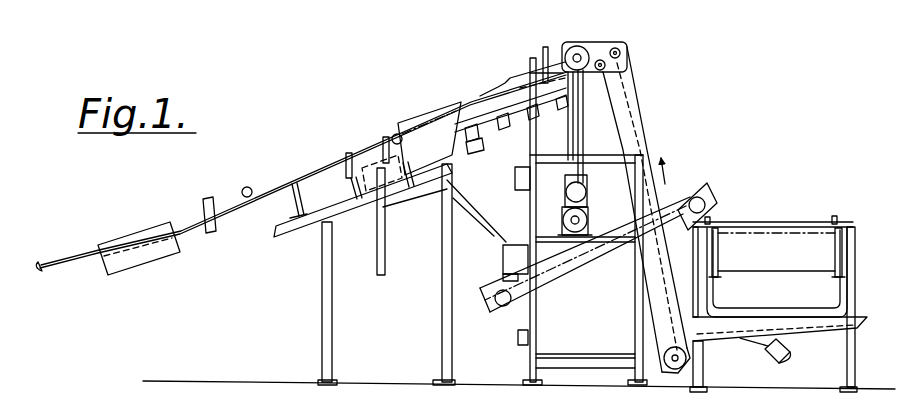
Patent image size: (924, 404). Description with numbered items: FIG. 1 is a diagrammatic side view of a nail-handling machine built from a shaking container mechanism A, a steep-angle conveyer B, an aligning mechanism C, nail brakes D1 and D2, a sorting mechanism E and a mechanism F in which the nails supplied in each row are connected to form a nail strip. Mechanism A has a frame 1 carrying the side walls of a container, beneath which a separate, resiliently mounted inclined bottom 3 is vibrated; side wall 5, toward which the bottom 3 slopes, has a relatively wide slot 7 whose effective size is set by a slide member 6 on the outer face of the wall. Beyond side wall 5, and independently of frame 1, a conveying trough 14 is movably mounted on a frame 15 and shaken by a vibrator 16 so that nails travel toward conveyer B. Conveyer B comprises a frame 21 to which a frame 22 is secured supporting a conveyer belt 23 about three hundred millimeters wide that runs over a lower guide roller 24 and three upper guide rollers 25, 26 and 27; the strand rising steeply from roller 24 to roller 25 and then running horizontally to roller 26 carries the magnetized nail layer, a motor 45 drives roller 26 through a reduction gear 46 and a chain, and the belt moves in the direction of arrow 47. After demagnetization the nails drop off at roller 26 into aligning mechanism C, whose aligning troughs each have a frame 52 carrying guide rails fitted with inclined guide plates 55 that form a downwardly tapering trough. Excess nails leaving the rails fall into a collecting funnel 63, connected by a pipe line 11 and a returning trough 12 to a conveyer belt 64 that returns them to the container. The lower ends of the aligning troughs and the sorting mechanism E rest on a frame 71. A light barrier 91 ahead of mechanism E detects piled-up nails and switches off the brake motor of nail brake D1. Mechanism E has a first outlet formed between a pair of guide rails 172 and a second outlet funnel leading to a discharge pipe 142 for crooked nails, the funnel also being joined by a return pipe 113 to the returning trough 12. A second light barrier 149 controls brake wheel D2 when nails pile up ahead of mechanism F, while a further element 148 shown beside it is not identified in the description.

The frame 1 is at (861, 223).
The inclined bottom 3 is at (743, 316).
The side wall 5 is at (824, 256).
The slide member 6 is at (831, 295).
The slot 7 is at (817, 318).
The pipe line 11 is at (464, 207).
The returning trough 12 is at (503, 262).
The conveying trough 14 is at (860, 327).
The frame 15 is at (851, 355).
The vibrator 16 is at (780, 360).
The frame 21 is at (536, 316).
The frame 22 is at (633, 117).
The conveyer belt 23 is at (637, 90).
The lower guide roller 24 is at (663, 360).
The first upper guide roller 25 is at (622, 52).
The second upper guide roller 26 is at (570, 53).
The third upper guide roller 27 is at (607, 66).
The motor 45 is at (580, 193).
The reduction gear 46 is at (588, 222).
The arrow 47 is at (664, 181).
The frame 52 is at (516, 130).
The guide plates 55 is at (522, 86).
The collecting funnel 63 is at (425, 118).
The conveyer belt 64 is at (588, 273).
The frame 71 is at (445, 291).
The light barrier 91 is at (385, 136).
The return pipe 113 is at (403, 208).
The discharge pipe 142 is at (385, 251).
The post 148 is at (347, 152).
The second light barrier 149 is at (208, 198).
The guide rails 172 is at (311, 181).
The shaking container mechanism A is at (794, 267).
The steep-angle conveyer B is at (651, 215).
The aligning mechanism C is at (478, 100).
The nail brake D1 is at (397, 133).
The nail brake D2 is at (248, 185).
The sorting mechanism E is at (372, 150).
The nail strip forming mechanism F is at (132, 224).